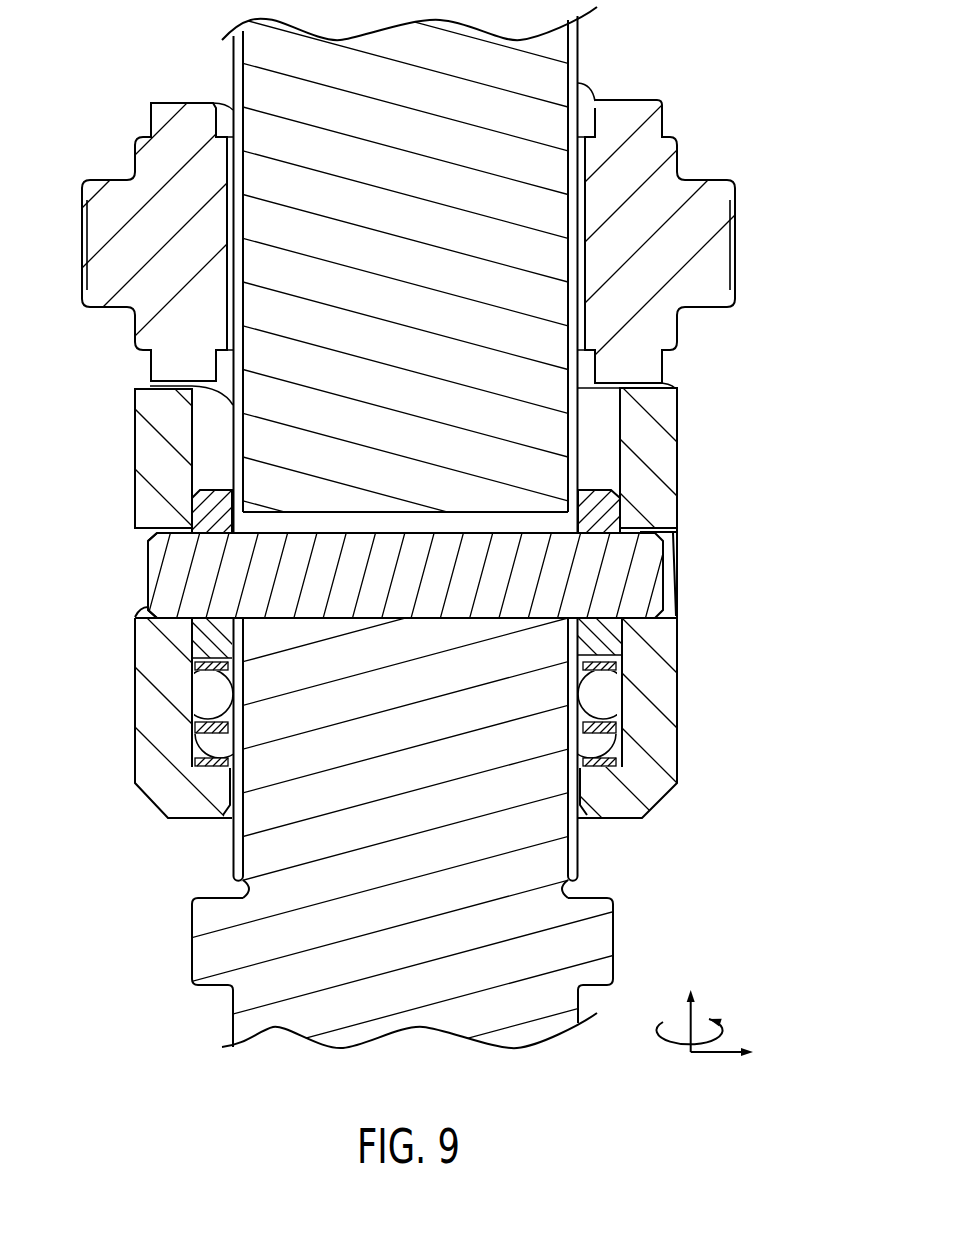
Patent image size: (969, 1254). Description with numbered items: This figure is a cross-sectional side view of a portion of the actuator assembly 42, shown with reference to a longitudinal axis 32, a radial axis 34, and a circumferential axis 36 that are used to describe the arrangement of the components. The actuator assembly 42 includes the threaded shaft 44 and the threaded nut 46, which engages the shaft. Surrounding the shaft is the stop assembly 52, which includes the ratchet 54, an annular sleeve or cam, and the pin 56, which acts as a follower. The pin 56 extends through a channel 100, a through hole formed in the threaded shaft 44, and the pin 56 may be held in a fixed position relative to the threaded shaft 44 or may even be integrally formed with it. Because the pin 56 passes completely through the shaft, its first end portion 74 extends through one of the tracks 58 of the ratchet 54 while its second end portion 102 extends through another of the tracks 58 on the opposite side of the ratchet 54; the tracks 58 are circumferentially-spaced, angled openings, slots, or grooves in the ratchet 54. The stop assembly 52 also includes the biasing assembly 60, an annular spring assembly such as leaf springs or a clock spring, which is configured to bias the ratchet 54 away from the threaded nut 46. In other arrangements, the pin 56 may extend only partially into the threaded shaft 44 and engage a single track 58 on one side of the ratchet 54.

The longitudinal axis 32 is at (693, 1018).
The radial axis 34 is at (717, 1055).
The circumferential axis 36 is at (668, 1042).
The actuator assembly 42 is at (430, 557).
The threaded shaft 44 is at (540, 63).
The threaded nut 46 is at (645, 140).
The stop assembly 52 is at (422, 610).
The ratchet 54 is at (663, 447).
The pin 56 is at (612, 572).
The tracks 58 is at (673, 537).
The biasing assembly 60 is at (600, 742).
The first end portion 74 is at (665, 588).
The channel 100 is at (397, 522).
The second end portion 102 is at (148, 575).